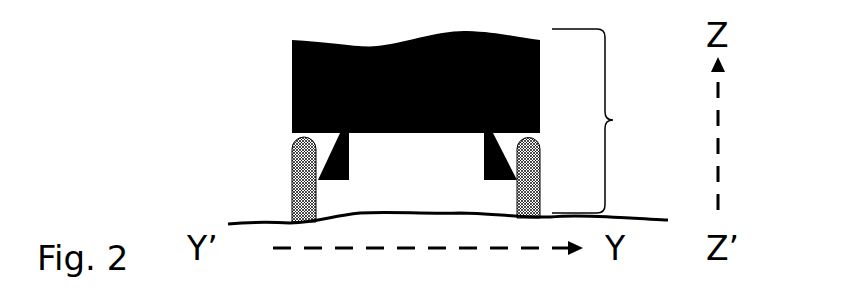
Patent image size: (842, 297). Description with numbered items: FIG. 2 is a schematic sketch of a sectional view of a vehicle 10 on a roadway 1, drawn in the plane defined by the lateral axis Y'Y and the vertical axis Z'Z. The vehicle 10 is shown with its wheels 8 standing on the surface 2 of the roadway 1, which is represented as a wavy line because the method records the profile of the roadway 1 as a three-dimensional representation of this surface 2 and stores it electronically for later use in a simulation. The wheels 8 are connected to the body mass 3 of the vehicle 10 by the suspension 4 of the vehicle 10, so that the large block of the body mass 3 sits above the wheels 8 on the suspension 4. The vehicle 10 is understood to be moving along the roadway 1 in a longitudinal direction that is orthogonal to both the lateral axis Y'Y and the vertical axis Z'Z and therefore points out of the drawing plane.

The roadway 1 is at (228, 86).
The surface of the roadway 2 is at (248, 219).
The body mass 3 is at (421, 134).
The suspension 4 is at (350, 165).
The wheels 8 is at (297, 170).
The vehicle 10 is at (613, 120).